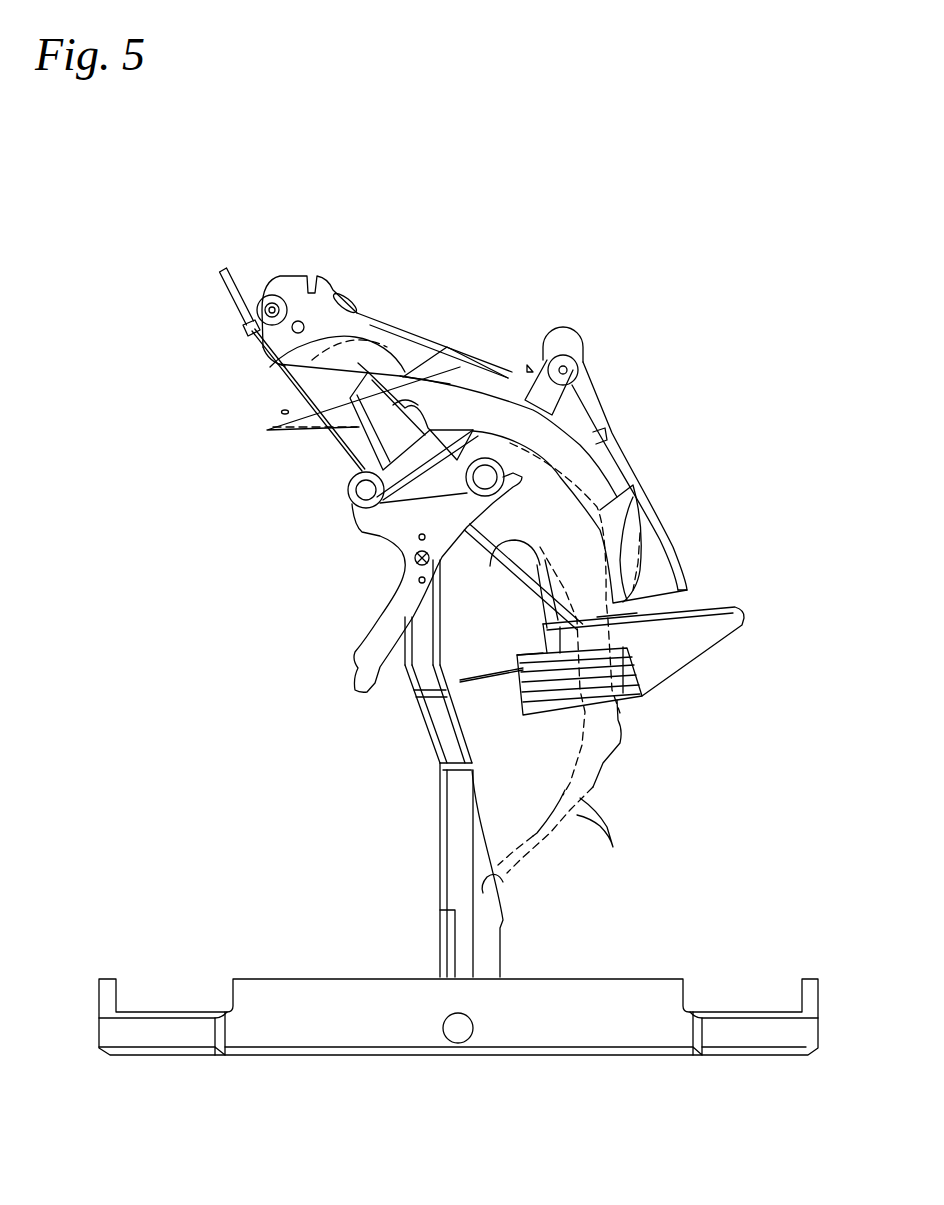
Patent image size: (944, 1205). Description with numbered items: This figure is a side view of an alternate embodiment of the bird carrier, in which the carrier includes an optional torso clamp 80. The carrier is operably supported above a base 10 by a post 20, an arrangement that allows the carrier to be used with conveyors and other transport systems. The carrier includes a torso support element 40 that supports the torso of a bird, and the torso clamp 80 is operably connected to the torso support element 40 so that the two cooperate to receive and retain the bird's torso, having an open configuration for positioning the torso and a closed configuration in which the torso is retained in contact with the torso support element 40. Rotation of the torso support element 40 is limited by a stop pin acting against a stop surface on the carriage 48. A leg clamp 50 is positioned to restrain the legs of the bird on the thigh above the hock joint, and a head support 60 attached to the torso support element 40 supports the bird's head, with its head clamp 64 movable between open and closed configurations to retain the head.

The base 10 is at (187, 1012).
The post 20 is at (440, 830).
The torso support element 40 is at (607, 463).
The carriage 48 is at (370, 540).
The leg clamp 50 is at (742, 645).
The head support 60 is at (279, 377).
The head clamp 64 is at (347, 300).
The torso clamp 80 is at (413, 328).